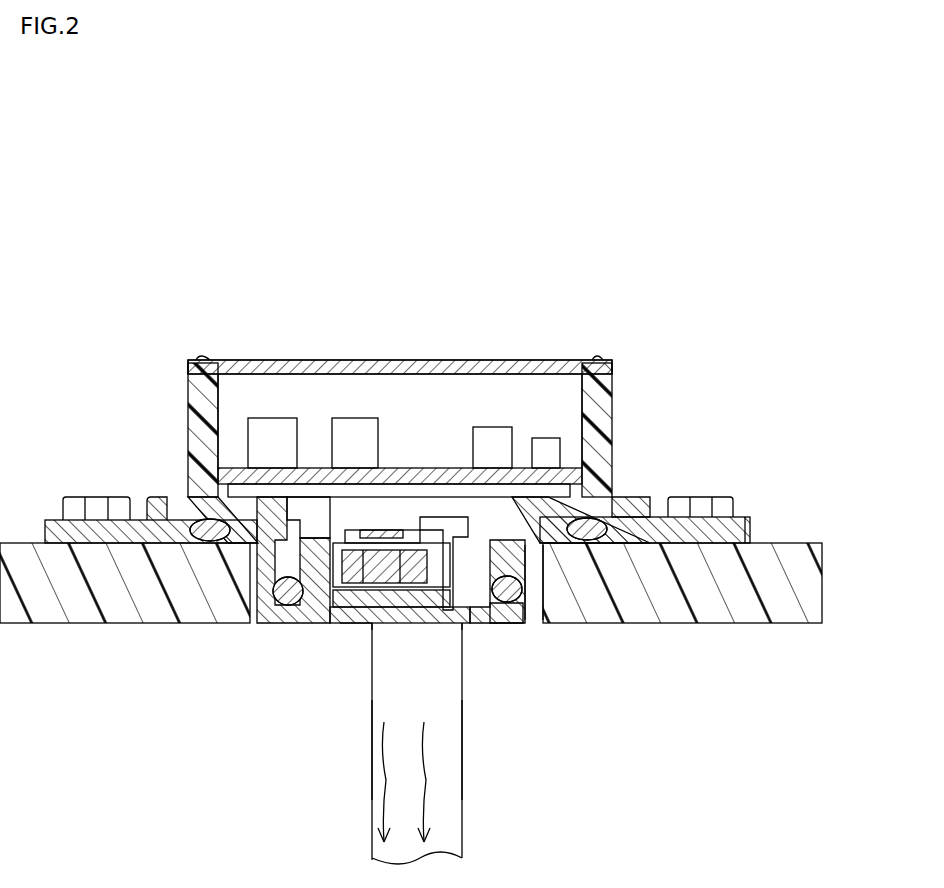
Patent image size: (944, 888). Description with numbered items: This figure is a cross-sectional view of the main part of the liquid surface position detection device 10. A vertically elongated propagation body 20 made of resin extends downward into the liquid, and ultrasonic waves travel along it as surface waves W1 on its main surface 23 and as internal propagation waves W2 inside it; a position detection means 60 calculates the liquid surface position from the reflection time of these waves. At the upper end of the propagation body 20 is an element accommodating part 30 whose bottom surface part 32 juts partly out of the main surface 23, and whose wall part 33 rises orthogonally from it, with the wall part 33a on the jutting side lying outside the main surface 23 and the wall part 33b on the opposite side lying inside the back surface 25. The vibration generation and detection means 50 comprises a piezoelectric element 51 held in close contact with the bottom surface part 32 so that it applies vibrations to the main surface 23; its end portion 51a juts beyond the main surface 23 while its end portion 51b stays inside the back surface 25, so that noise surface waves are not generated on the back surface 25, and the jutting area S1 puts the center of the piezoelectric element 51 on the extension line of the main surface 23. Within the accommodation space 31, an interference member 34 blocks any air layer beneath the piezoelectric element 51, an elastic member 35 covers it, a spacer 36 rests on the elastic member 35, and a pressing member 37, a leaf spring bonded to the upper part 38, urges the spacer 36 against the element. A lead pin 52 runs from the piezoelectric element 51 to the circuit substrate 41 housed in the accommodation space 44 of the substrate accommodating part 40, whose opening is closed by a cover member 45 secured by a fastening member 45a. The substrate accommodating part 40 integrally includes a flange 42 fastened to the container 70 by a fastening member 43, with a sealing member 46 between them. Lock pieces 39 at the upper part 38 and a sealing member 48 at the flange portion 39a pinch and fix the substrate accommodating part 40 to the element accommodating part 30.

The liquid surface position detection device 10 is at (138, 240).
The propagation body 20 is at (470, 850).
The main surface 23 is at (372, 826).
The back surface 25 is at (462, 826).
The element accommodating part 30 is at (305, 628).
The accommodation space 31 is at (347, 510).
The bottom surface part 32 is at (395, 626).
The wall part 33 is at (242, 548).
The wall part on the jutting side 33a is at (292, 557).
The wall part on the side opposite to the jutting side 33b is at (547, 556).
The interference member 34 is at (390, 624).
The elastic member 35 is at (384, 557).
The spacer 36 is at (312, 522).
The pressing member 37 is at (383, 527).
The upper part of the element accommodating part 38 is at (478, 532).
The lock pieces 39 is at (218, 490).
The flange portion 39a is at (532, 625).
The substrate accommodating part 40 is at (184, 412).
The circuit substrate 41 is at (518, 468).
The flange 42 is at (745, 520).
The fastening member 43 is at (696, 497).
The accommodation space 44 is at (530, 400).
The cover member 45 is at (525, 360).
The fastening member 45a is at (594, 358).
The sealing member 46 is at (626, 522).
The sealing member 48 is at (560, 612).
The vibration generation and detection means 50 is at (380, 515).
The piezoelectric element 51 is at (432, 626).
The end portion of the piezoelectric element on the jutting side 51a is at (345, 626).
The end portion of the piezoelectric element on the side opposite to the jutting sid 51b is at (470, 624).
The lead pin 52 is at (448, 527).
The position detection means 60 is at (422, 455).
The container 70 is at (792, 543).
The area S1 is at (355, 628).
The surface waves W1 is at (384, 778).
The internal propagation waves W2 is at (424, 778).